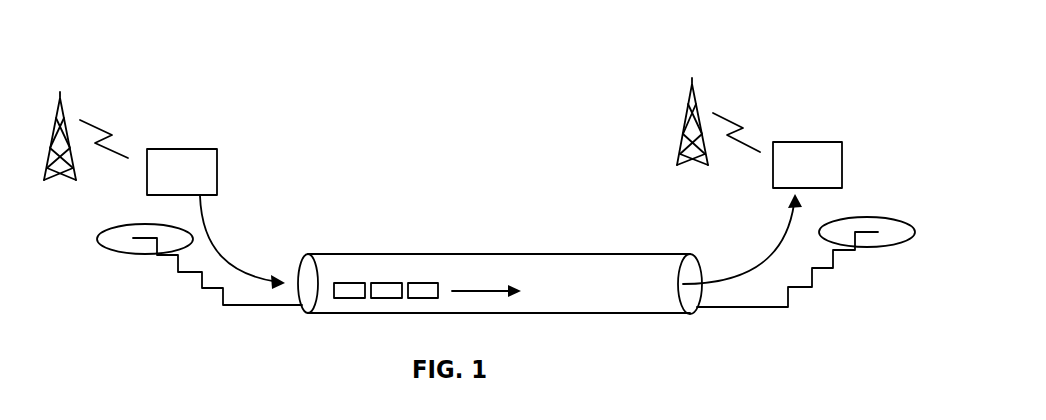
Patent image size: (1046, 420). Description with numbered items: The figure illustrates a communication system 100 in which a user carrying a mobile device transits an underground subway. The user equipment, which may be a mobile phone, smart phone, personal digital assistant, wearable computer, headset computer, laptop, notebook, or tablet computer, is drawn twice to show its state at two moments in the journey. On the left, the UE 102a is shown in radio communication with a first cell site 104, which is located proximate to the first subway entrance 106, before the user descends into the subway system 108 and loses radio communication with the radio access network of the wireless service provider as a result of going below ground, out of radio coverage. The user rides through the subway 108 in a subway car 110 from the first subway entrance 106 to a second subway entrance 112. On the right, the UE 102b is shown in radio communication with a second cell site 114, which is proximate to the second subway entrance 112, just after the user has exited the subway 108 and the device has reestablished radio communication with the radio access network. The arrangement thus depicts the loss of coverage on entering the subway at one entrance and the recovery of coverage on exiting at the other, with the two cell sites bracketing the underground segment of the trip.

The system 100 is at (419, 66).
The user equipment 102a is at (178, 149).
The user equipment 102b is at (803, 142).
The first cell site 104 is at (60, 97).
The first subway entrance 106 is at (118, 245).
The subway system 108 is at (500, 254).
The subway car 110 is at (388, 283).
The second subway entrance 112 is at (893, 245).
The second cell site 114 is at (692, 83).